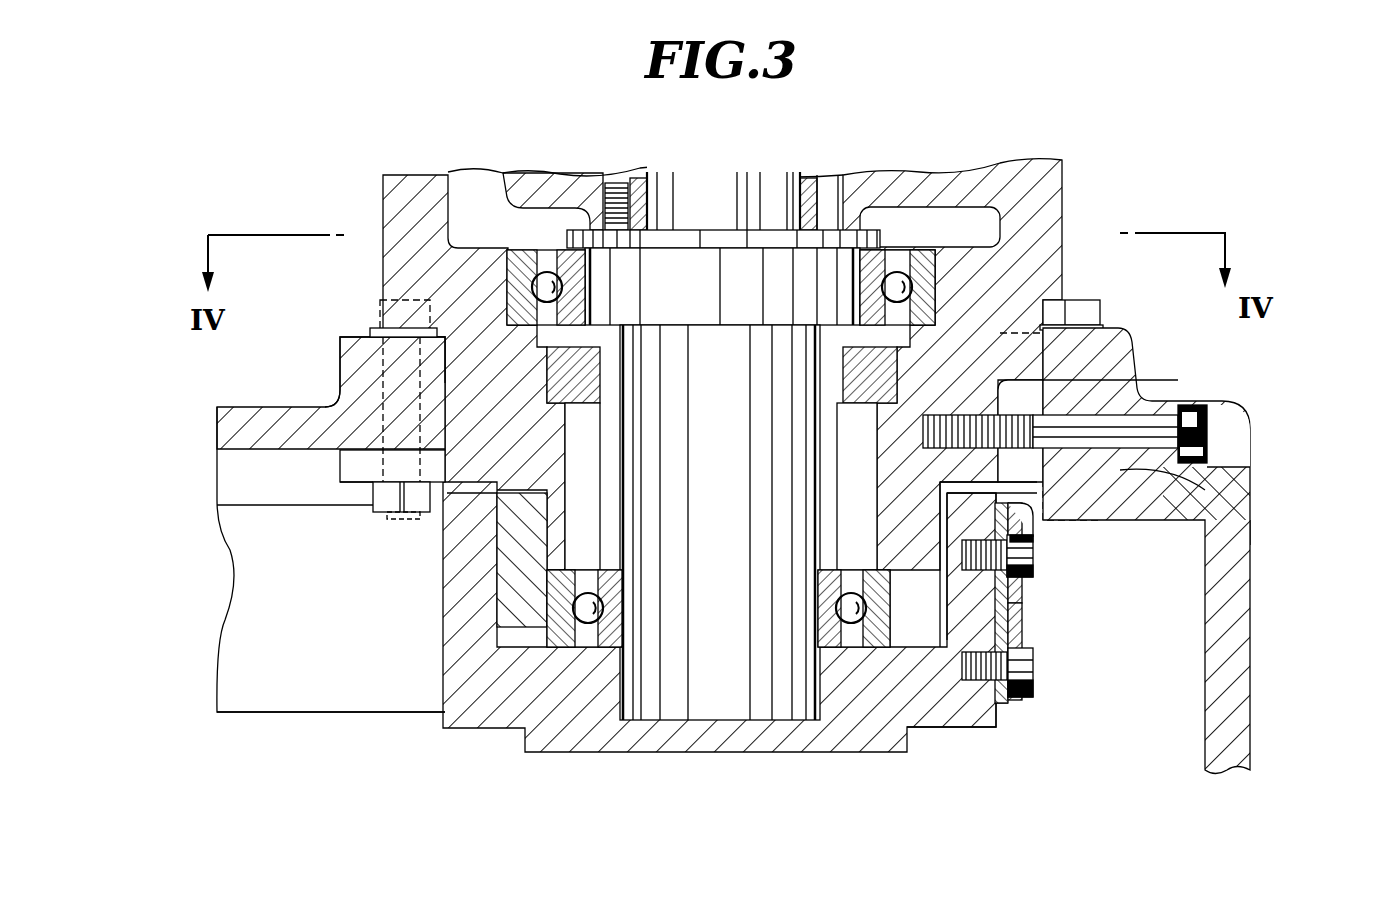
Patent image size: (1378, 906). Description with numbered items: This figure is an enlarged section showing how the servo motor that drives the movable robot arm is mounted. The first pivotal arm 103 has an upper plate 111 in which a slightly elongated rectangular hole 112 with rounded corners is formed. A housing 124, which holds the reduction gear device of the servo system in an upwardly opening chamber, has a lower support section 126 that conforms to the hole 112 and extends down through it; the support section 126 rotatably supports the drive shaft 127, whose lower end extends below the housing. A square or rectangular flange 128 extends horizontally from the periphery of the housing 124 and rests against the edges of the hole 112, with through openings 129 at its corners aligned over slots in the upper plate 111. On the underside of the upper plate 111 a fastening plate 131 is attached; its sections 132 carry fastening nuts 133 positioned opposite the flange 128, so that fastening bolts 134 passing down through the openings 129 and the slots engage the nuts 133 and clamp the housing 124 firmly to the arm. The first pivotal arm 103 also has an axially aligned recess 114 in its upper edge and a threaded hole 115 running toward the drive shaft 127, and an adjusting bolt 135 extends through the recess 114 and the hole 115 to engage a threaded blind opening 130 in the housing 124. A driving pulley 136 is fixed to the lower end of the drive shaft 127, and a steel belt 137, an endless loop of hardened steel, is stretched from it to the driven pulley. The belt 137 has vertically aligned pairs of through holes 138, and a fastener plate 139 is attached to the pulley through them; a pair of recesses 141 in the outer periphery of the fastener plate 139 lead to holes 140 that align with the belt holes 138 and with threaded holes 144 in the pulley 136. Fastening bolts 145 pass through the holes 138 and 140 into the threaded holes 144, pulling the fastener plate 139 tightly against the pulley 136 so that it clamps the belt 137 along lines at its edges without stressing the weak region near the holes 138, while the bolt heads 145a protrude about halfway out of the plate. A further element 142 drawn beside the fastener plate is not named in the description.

The first pivotal arm 103 is at (217, 402).
The upper plate 111 is at (248, 413).
The rectangular hole 112 is at (445, 397).
The recess 114 is at (1225, 443).
The threaded hole 115 is at (1250, 490).
The housing 124 is at (1047, 187).
The lower support section 126 is at (508, 583).
The drive shaft 127 is at (703, 547).
The flange 128 is at (1122, 352).
The through openings 129 is at (365, 337).
The threaded blind opening 130 is at (1000, 380).
The fastening plate 131 is at (340, 465).
The sections 132 is at (343, 485).
The fastening nuts 133 is at (370, 493).
The fastening bolts 134 is at (377, 328).
The adjusting bolt 135 is at (1197, 418).
The driving pulley 136 is at (487, 712).
The steel belt 137 is at (386, 690).
The through holes 138 is at (1027, 590).
The fastener plates 139 is at (1023, 637).
The holes 140 is at (1033, 550).
The recesses 141 is at (945, 493).
The plate 142 is at (1013, 618).
The threaded holes 144 is at (940, 708).
The fastening bolts 145 is at (958, 553).
The heads 145a is at (1034, 571).